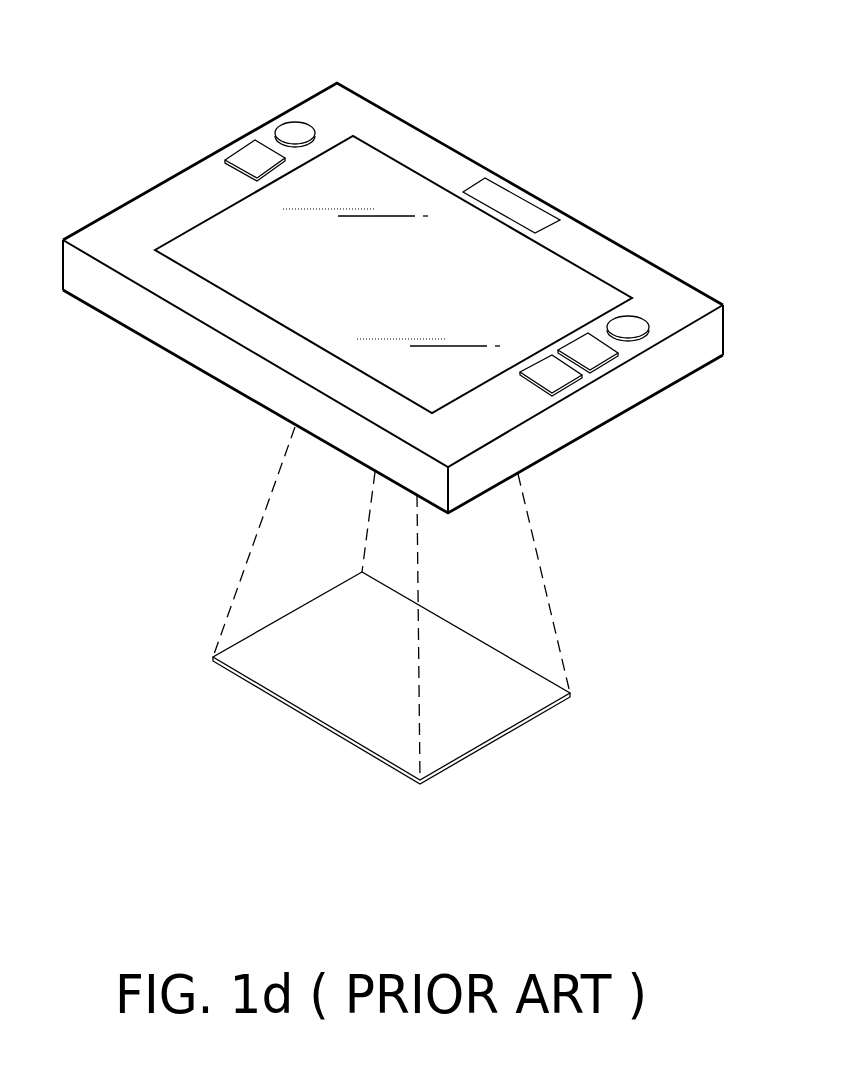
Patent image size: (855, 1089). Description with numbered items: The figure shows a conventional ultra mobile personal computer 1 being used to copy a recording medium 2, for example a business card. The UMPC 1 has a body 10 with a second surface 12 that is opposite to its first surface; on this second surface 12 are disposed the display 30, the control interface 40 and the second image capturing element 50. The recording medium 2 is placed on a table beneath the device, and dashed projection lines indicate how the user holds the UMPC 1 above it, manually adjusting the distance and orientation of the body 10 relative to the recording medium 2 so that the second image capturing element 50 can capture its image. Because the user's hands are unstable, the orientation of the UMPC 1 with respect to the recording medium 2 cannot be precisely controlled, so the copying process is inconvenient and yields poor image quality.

The ultra mobile personal computer 1 is at (37, 29).
The recording medium 2 is at (493, 718).
The body 10 is at (670, 386).
The second surface 12 is at (618, 267).
The display 30 is at (538, 265).
The control interface 40 is at (250, 157).
The second image capturing element 50 is at (493, 195).